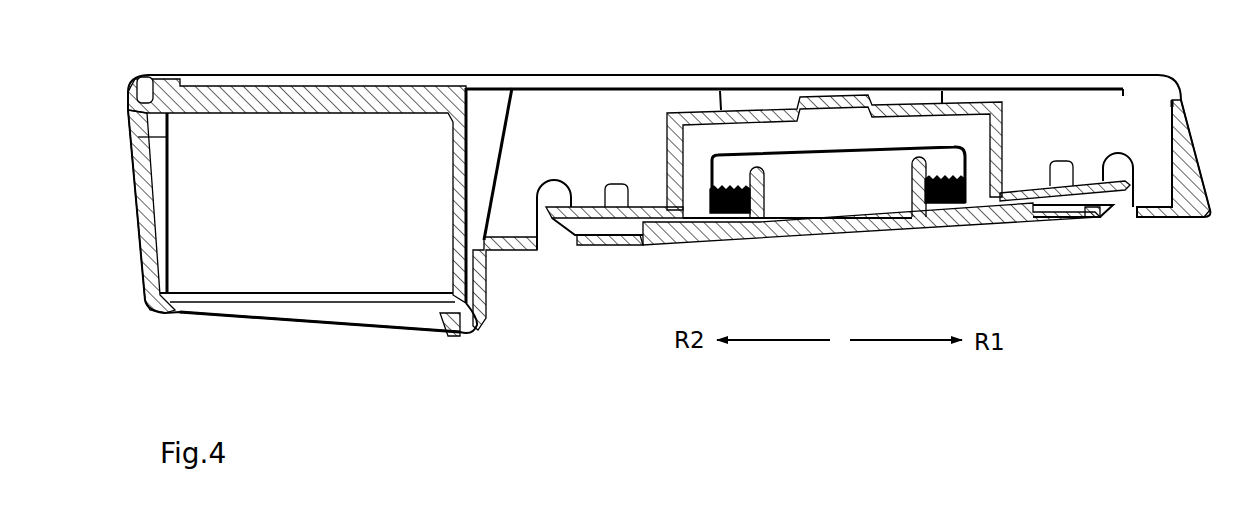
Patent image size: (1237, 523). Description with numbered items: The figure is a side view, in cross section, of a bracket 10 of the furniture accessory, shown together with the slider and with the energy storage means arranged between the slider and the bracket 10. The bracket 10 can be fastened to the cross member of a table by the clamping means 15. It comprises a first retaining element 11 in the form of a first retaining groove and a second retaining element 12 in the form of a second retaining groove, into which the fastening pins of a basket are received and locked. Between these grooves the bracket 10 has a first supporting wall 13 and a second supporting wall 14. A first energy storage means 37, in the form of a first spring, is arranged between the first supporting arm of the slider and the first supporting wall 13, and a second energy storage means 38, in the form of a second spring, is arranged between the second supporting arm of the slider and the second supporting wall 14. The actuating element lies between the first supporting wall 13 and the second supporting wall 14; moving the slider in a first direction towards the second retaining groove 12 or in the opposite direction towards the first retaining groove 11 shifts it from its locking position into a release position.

The bracket 10 is at (460, 74).
The first retaining element 11 is at (557, 238).
The second retaining element 12 is at (1119, 213).
The first supporting wall 13 is at (770, 202).
The second supporting wall 14 is at (913, 182).
The clamping means 15 is at (308, 265).
The first energy storage means 37 is at (732, 214).
The second energy storage means 38 is at (955, 210).